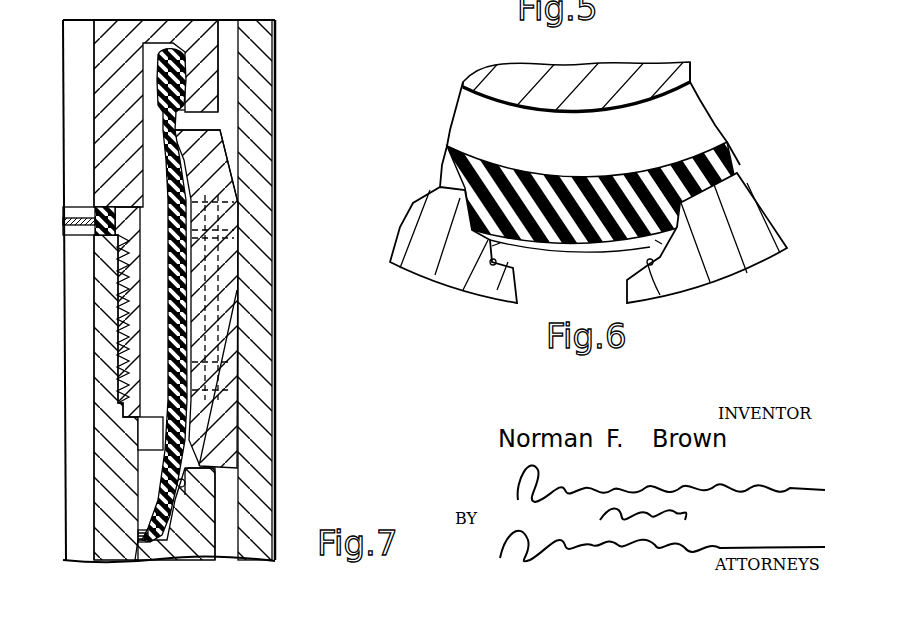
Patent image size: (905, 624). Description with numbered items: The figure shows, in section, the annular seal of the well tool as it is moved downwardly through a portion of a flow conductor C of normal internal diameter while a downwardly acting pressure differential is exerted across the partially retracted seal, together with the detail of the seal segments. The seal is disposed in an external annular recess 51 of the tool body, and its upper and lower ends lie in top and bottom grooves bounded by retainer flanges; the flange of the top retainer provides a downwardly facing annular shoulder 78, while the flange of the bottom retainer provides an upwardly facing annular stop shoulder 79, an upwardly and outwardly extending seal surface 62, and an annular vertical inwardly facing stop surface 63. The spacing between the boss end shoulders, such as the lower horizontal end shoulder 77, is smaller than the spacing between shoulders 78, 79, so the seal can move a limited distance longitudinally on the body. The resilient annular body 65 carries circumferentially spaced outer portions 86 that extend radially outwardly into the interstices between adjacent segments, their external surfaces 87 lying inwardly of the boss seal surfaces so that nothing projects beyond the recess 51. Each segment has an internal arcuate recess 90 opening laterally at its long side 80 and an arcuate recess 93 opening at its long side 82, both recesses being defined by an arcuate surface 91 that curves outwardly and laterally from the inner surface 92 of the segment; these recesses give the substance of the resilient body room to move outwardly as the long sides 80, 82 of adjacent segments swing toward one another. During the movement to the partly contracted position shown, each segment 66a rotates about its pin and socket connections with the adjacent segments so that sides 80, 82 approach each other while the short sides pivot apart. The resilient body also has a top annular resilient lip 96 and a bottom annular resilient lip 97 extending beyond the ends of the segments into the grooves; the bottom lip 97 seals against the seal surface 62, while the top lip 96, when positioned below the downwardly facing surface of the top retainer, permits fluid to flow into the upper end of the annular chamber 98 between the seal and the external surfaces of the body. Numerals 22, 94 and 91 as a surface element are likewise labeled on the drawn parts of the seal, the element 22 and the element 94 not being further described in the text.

In FIG. 6, the casing cap 22 is at (662, 75).
In FIG. 6, the resilient annular body 65 is at (730, 148).
In FIG. 6, the inner surface 92 is at (727, 160).
In FIG. 6, the left segment 94 is at (462, 290).
In FIG. 6, the arcuate surface 91 is at (670, 297).
In FIG. 6, the long longitudinal side 80 is at (627, 282).
In FIG. 6, the long longitudinal side 82 is at (520, 290).
In FIG. 6, the outer portions 86 is at (495, 240).
In FIG. 6, the external surfaces 87 is at (572, 210).
In FIG. 6, the internal arcuate recess 90 is at (657, 243).
In FIG. 6, the arcuate recess 93 is at (492, 246).
In FIG. 7, the top annular resilient lip 96 is at (158, 72).
In FIG. 7, the annular chamber 98 is at (147, 295).
In FIG. 7, the downwardly facing annular shoulder 78 is at (218, 113).
In FIG. 7, the external annular recess 51 is at (200, 122).
In FIG. 7, the flow conductor c is at (263, 167).
In FIG. 7, the segment 66a is at (193, 347).
In FIG. 7, the upwardly facing annular stop shoulder 79 is at (227, 468).
In FIG. 7, the horizontal end shoulder 77 is at (215, 472).
In FIG. 7, the annular vertical inwardly facing stop surface 63 is at (186, 490).
In FIG. 7, the annular seal surface 62 is at (178, 507).
In FIG. 7, the bottom annular resilient lip 97 is at (180, 520).